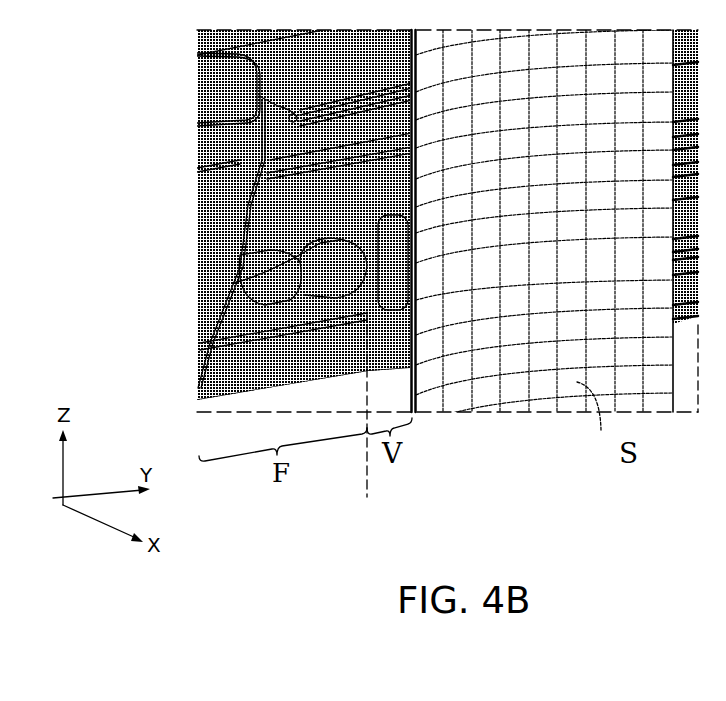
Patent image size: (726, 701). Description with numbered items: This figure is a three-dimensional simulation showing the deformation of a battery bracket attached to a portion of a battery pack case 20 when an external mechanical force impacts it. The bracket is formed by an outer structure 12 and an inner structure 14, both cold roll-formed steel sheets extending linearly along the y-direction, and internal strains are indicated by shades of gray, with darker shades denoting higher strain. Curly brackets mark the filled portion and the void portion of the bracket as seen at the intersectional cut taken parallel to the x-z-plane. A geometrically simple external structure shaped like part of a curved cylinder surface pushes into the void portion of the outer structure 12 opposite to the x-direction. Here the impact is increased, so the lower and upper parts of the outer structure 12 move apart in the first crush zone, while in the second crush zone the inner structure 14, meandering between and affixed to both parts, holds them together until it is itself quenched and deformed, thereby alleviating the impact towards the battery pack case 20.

The outer structure 12 is at (200, 248).
The inner structure 14 is at (200, 331).
The battery pack case 20 is at (200, 171).